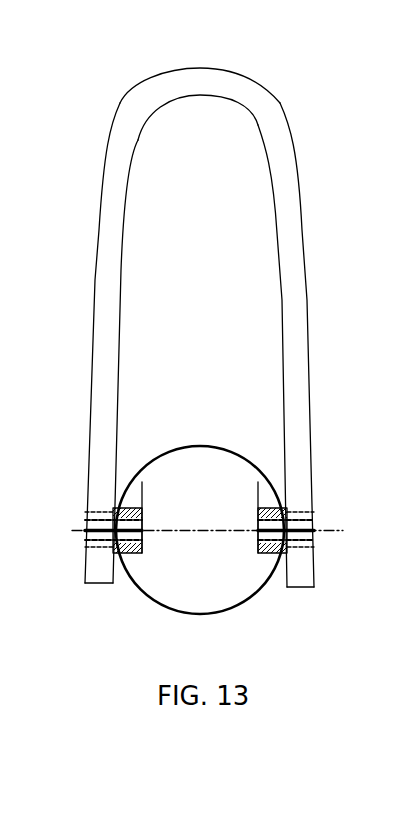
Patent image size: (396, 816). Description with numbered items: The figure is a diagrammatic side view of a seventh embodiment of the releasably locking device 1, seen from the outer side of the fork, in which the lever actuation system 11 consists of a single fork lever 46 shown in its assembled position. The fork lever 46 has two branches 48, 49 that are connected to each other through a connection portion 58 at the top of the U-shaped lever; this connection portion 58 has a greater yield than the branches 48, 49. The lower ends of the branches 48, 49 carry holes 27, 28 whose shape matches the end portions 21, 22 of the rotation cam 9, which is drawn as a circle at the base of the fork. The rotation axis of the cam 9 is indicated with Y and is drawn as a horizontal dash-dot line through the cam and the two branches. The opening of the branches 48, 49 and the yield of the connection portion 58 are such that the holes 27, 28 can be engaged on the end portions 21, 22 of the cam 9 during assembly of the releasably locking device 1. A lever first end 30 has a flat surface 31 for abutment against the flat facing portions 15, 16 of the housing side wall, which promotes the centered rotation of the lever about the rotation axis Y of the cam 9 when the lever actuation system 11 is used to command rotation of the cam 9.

The releasably locking device 1 is at (321, 632).
The rotation cam 9 is at (215, 580).
The lever actuation system 11 is at (324, 198).
The flat facing portion of side wall 15 is at (133, 486).
The flat facing portion of side wall 16 is at (282, 508).
The end portion of cam 21 is at (132, 555).
The end portion of cam 22 is at (270, 555).
The hole 27 is at (85, 543).
The hole 28 is at (306, 510).
The first end of lever 30 is at (113, 461).
The flat surface 31 is at (288, 470).
The fork lever 46 is at (306, 237).
The branch of fork lever 48 is at (103, 312).
The branch of fork lever 49 is at (299, 300).
The connection portion 58 is at (278, 122).
The rotation axis of cam Y is at (343, 532).